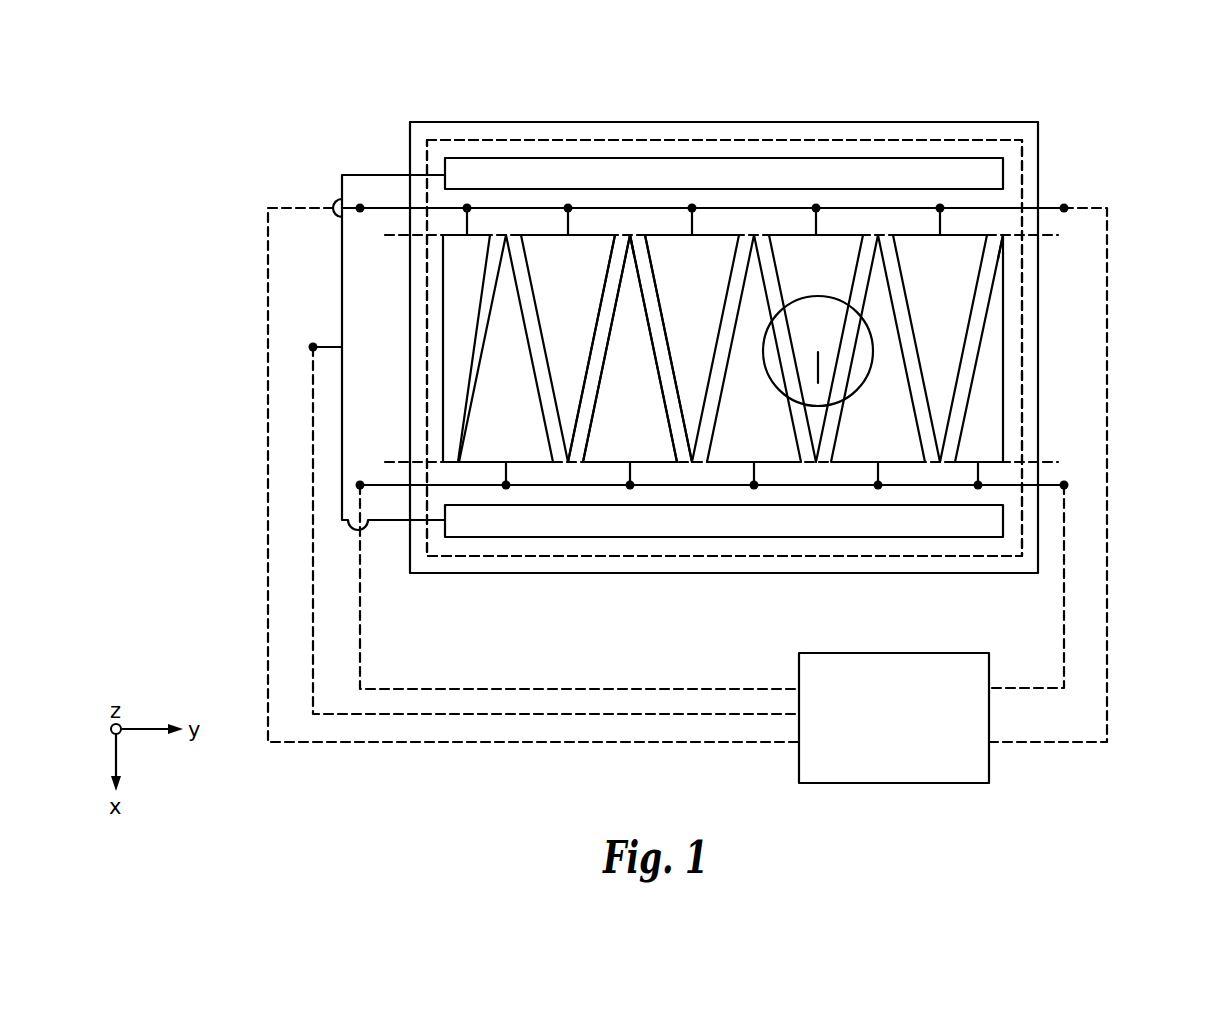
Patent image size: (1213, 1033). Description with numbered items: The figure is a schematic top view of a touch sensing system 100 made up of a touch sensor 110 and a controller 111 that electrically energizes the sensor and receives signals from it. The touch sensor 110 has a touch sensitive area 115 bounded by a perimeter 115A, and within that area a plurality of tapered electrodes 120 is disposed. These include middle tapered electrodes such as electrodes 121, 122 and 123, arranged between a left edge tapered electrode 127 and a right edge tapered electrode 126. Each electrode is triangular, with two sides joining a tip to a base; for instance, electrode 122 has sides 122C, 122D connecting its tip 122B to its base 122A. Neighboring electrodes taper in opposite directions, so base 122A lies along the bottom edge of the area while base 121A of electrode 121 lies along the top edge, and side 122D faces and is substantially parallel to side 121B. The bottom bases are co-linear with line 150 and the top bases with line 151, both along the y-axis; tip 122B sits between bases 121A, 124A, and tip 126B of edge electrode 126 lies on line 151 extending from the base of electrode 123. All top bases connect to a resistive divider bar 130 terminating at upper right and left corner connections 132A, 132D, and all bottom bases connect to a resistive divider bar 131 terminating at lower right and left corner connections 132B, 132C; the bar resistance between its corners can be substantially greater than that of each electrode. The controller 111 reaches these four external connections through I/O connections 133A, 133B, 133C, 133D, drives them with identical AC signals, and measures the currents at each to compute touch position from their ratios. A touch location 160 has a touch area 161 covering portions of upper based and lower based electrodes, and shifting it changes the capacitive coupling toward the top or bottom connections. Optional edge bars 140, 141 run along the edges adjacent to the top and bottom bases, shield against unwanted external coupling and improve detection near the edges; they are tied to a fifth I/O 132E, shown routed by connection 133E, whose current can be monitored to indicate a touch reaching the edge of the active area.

The touch sensing system 100 is at (366, 60).
The touch sensor 110 is at (1017, 122).
The controller 111 is at (937, 770).
The touch sensitive area 115 is at (949, 145).
The perimeter 115A is at (896, 139).
The tapered electrodes 120 is at (802, 350).
The middle tapered electrode 121 is at (802, 269).
The base of electrode 121 121A is at (537, 236).
The side of electrode 121 121B is at (606, 277).
The middle tapered electrode 122 is at (818, 350).
The base of electrode 122 122A is at (596, 462).
The tip of electrode 122 122B is at (627, 236).
The side of electrode 122 122C is at (656, 362).
The side of electrode 122 122D is at (590, 430).
The middle tapered electrode 123 is at (963, 284).
The electrode base 124A is at (712, 236).
The edge tapered electrode 126 is at (992, 327).
The tip of electrode 126 126B is at (1003, 240).
The edge tapered electrode 127 is at (453, 236).
The resistive divider bar 130 is at (843, 207).
The resistive divider bar 131 is at (930, 487).
The upper right corner connection 132A is at (1065, 207).
The lower right corner connection 132B is at (1064, 485).
The lower left corner connection 132C is at (360, 485).
The upper left corner connection 132D is at (360, 206).
The fifth I/O 132E is at (340, 345).
The I/O connection 133A is at (1107, 725).
The I/O connection 133B is at (1045, 689).
The I/O connection 133C is at (484, 690).
The I/O connection 133D is at (402, 743).
The fifth signal line 133E is at (573, 715).
The edge bar 140 is at (973, 157).
The edge bar 141 is at (762, 525).
The line 150 is at (1058, 462).
The line 151 is at (1058, 235).
The touch location 160 is at (855, 393).
The touch area 161 is at (818, 383).